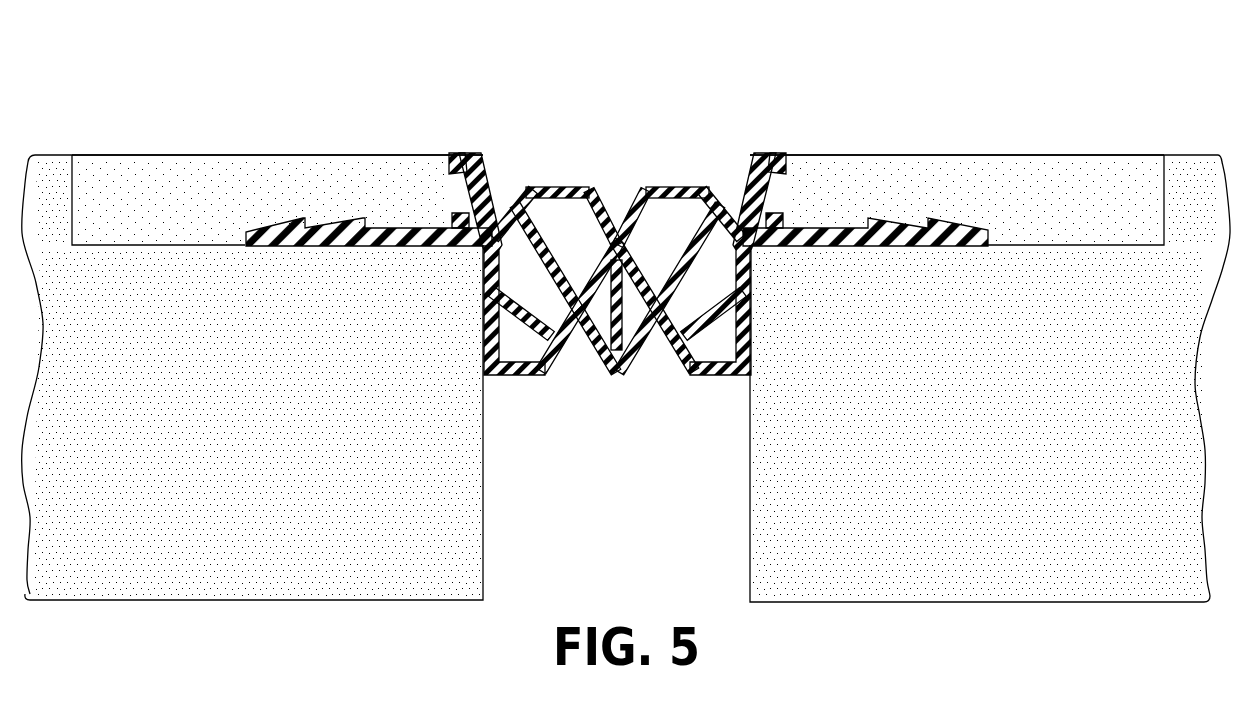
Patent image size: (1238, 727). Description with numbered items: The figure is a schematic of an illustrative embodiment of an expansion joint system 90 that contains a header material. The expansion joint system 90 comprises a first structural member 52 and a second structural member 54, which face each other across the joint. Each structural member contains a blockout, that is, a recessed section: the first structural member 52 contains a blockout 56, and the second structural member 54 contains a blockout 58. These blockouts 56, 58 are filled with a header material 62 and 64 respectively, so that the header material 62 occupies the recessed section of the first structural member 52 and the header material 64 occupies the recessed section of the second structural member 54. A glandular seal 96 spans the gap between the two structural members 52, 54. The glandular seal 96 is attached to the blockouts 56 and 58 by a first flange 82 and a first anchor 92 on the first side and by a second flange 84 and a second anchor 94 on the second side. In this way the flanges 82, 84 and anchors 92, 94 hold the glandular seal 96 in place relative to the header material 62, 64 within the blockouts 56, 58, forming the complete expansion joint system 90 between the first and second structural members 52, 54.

The first structural member 52 is at (47, 162).
The second structural member 54 is at (1188, 168).
The blockout 56 is at (73, 185).
The blockout 58 is at (1163, 185).
The header material 62 is at (203, 172).
The header material 64 is at (1010, 172).
The first flange 82 is at (337, 223).
The second flange 84 is at (893, 223).
The expansion joint system 90 is at (552, 72).
The first anchor 92 is at (487, 177).
The second anchor 94 is at (750, 175).
The glandular seal 96 is at (683, 185).